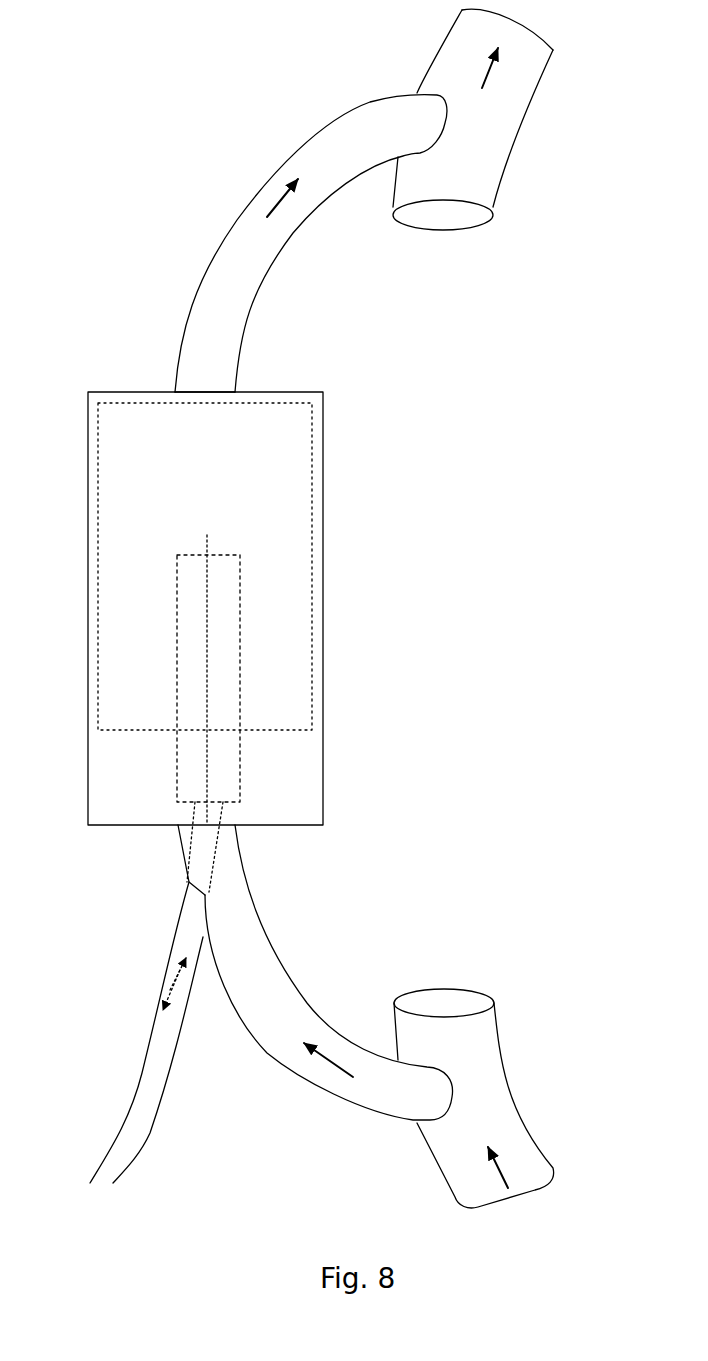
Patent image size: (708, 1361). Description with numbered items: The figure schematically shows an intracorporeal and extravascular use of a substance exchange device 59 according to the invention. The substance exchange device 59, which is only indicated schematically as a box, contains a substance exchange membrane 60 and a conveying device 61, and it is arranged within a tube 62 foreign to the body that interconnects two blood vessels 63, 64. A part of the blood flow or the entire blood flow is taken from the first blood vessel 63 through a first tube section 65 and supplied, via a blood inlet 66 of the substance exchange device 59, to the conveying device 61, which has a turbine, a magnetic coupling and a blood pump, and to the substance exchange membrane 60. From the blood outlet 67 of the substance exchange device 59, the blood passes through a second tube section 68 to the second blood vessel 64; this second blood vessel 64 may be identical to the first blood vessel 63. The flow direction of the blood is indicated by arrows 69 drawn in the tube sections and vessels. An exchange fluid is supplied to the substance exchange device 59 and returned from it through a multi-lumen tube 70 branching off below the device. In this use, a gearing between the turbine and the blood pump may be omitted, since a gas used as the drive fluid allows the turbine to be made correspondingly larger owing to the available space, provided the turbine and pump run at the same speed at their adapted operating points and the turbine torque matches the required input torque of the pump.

The substance exchange device 59 is at (278, 608).
The substance exchange membrane 60 is at (312, 635).
The conveying device 61 is at (240, 768).
The tube foreign to the body 62 is at (323, 557).
The first blood vessel 63 is at (512, 1078).
The second blood vessel 64 is at (497, 172).
The first tube section 65 is at (265, 932).
The blood inlet 66 is at (180, 828).
The blood outlet 67 is at (209, 389).
The second tube section 68 is at (257, 178).
The arrows 69 is at (480, 75).
The multi-lumen tube 70 is at (162, 985).